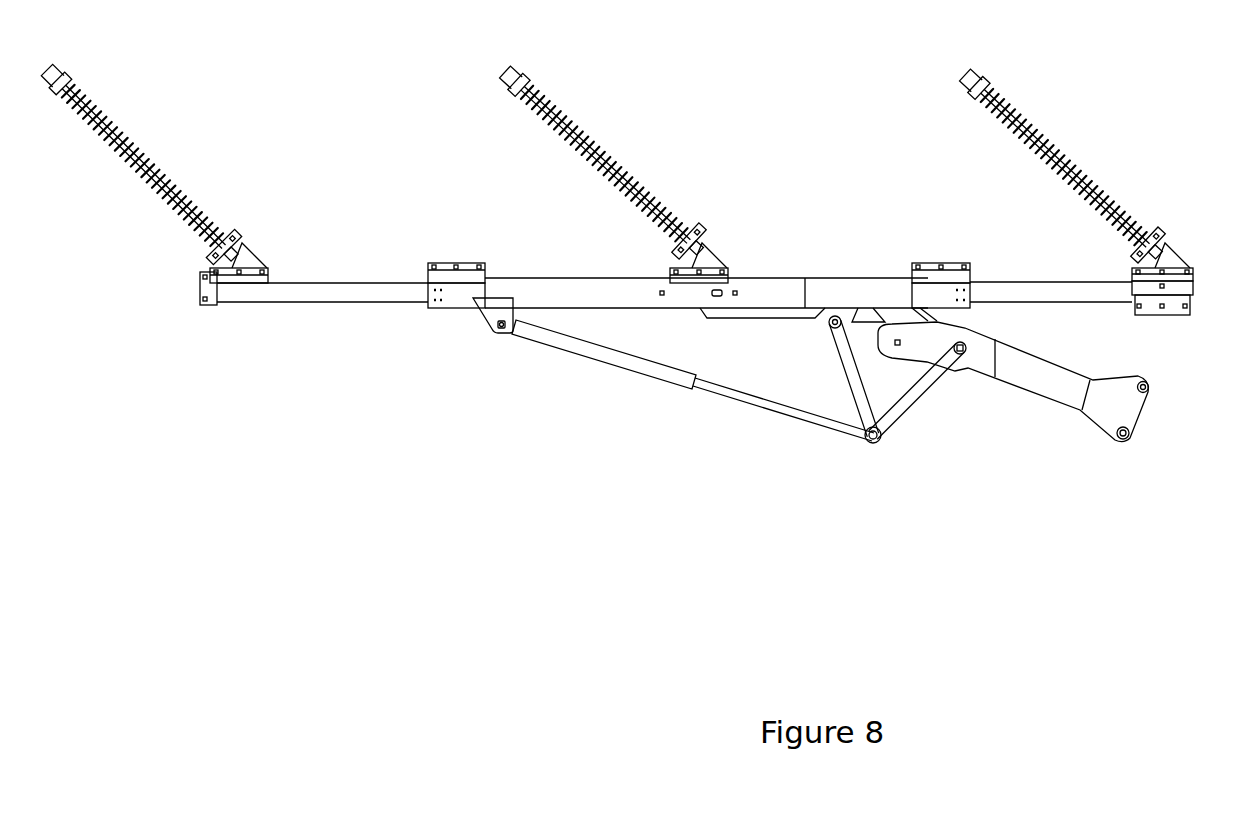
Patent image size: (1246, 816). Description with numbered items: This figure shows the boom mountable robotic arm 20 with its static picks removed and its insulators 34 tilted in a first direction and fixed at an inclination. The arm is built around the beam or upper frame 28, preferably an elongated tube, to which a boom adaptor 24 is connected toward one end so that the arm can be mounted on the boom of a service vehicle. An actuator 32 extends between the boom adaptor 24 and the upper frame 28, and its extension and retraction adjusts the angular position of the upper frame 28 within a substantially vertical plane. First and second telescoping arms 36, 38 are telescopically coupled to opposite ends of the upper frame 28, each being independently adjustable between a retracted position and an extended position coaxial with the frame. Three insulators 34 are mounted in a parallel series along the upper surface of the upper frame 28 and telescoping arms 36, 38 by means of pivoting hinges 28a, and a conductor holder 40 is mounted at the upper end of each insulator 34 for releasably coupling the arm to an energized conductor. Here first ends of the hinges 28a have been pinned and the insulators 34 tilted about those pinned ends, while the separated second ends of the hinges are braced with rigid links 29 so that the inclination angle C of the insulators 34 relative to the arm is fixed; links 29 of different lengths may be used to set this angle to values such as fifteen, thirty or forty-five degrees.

The robotic arm 20 is at (793, 123).
The boom adaptor 24 is at (1068, 436).
The upper frame 28 is at (781, 278).
The pivoting hinge 28a is at (202, 264).
The link 29 is at (252, 257).
The actuator 32 is at (800, 456).
The insulator 34 is at (150, 160).
The first telescoping arm 36 is at (1014, 280).
The second telescoping arm 38 is at (344, 280).
The conductor holder 40 is at (521, 78).
The inclination angle C is at (1108, 242).